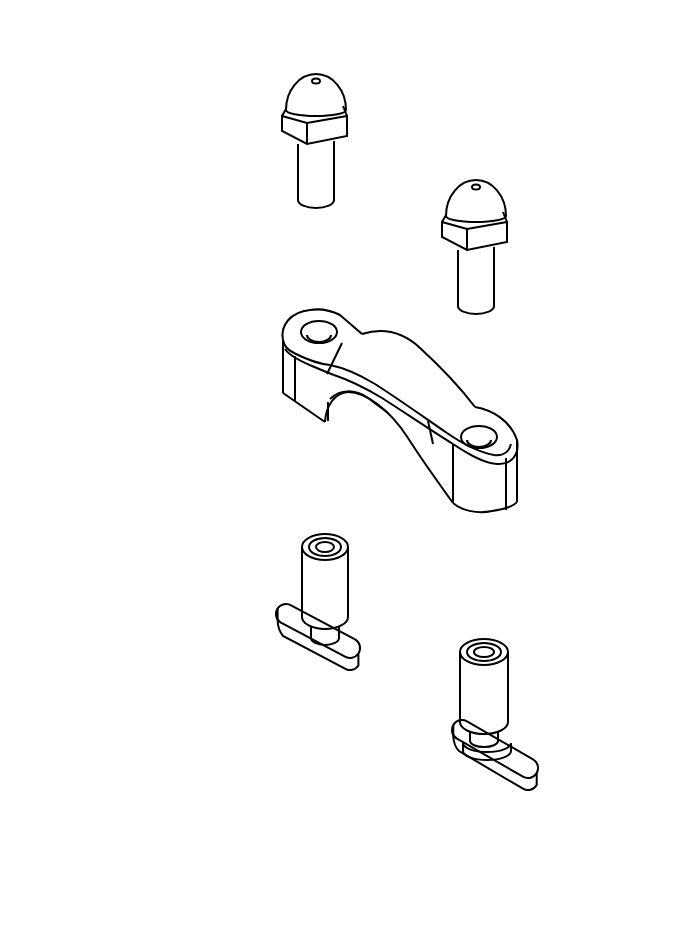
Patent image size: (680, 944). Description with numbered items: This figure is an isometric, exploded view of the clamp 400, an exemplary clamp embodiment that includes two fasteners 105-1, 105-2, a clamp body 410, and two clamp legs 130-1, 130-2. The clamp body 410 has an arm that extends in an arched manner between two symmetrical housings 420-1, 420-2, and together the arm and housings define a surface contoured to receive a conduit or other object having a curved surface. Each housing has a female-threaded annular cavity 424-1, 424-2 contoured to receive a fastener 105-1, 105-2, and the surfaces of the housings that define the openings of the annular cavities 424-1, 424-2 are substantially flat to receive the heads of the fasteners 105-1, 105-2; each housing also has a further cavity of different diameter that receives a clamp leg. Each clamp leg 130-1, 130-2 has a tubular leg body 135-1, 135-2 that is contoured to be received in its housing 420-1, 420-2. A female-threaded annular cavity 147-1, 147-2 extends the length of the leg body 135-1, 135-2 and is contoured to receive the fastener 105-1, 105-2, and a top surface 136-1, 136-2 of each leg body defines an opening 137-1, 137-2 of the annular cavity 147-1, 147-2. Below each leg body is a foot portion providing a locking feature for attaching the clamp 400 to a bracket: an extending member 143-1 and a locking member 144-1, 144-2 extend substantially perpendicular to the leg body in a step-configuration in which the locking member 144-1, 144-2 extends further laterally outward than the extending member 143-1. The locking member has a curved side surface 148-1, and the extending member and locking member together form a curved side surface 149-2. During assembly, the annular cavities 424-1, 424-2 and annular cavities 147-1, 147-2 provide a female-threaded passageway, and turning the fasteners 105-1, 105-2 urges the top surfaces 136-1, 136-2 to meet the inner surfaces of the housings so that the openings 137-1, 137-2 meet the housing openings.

The clamp 400 is at (227, 85).
The fastener 105-1 is at (496, 270).
The fastener 105-2 is at (299, 173).
The clamp body 410 is at (276, 300).
The housing 420-1 is at (523, 430).
The housing 420-2 is at (267, 322).
The annular cavity 424-1 is at (483, 434).
The annular cavity 424-2 is at (322, 332).
The clamp leg 130-1 is at (511, 567).
The clamp leg 130-2 is at (277, 520).
The leg body 135-1 is at (452, 648).
The leg body 135-2 is at (353, 546).
The top surface 136-1 is at (508, 653).
The top surface 136-2 is at (345, 542).
The opening 137-1 is at (466, 649).
The opening 137-2 is at (309, 543).
The annular cavity 147-1 is at (485, 648).
The annular cavity 147-2 is at (363, 503).
The extending member 143-1 is at (507, 747).
The locking member 144-1 is at (525, 762).
The locking member 144-2 is at (289, 604).
The curved side surface 148-1 is at (541, 775).
The curved side surface 149-2 is at (344, 669).